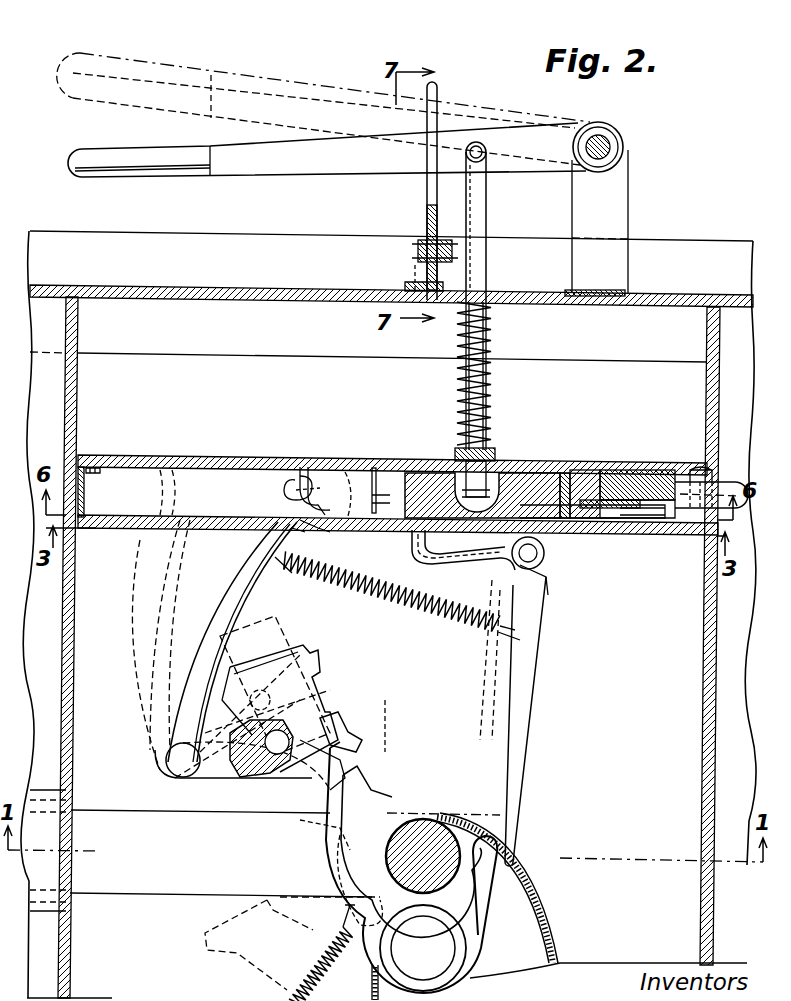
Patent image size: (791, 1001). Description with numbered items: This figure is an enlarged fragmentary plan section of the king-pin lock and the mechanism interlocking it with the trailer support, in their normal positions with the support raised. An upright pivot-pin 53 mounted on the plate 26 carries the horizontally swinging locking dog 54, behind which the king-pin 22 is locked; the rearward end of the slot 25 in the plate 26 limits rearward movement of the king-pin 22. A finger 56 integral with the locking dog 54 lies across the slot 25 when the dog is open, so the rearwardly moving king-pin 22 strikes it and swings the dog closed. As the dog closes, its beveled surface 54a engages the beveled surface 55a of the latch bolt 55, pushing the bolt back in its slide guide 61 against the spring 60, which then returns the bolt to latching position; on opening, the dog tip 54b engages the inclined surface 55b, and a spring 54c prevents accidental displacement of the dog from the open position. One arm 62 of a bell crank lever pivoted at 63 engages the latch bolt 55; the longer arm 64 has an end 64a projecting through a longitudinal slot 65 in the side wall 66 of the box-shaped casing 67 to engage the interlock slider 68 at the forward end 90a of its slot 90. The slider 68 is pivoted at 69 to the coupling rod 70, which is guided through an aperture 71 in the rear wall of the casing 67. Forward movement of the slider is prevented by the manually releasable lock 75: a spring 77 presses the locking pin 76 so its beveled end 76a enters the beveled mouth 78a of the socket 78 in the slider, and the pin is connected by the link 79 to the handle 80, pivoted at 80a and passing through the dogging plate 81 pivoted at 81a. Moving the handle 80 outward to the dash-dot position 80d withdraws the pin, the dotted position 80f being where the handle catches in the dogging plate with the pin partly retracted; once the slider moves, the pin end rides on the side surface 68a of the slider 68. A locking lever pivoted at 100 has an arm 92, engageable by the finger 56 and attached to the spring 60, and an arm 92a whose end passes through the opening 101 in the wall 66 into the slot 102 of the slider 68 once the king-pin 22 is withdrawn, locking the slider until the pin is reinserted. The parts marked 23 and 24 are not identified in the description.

The king-pin 22 is at (425, 835).
The carriage 23 is at (394, 740).
The top plate 24 is at (682, 238).
The slot 25 is at (148, 893).
The plate 26 is at (114, 842).
The pivot-pin 53 is at (423, 948).
The locking dog 54 is at (320, 866).
The beveled surface 54a is at (372, 775).
The tip 54b is at (340, 728).
The spring 54c is at (285, 992).
The latch bolt 55 is at (283, 790).
The beveled surface 55a is at (305, 812).
The inclined surface 55b is at (330, 826).
The finger 56 is at (345, 846).
The spring 60 is at (385, 612).
The slide guide 61 is at (305, 670).
The arm 62 is at (245, 778).
The pivot 63 is at (168, 766).
The arm 64 is at (235, 587).
The arm end 64a is at (158, 483).
The longitudinal slot 65 is at (275, 535).
The side wall 66 is at (193, 530).
The box-shaped casing 67 is at (325, 456).
The interlock slider 68 is at (400, 460).
The side surface 68a is at (545, 451).
The slider pivot 69 is at (575, 535).
The coupling rod 70 is at (740, 485).
The aperture 71 is at (720, 482).
The manually releasable lock 75 is at (490, 435).
The locking pin 76 is at (488, 405).
The beveled end 76a is at (455, 452).
The spring 77 is at (492, 337).
The socket 78 is at (562, 470).
The beveled mouth 78a is at (574, 468).
The link 79 is at (486, 209).
The handle 80 is at (298, 168).
The handle pivot 80a is at (625, 141).
The handle position 80d is at (265, 70).
The handle position 80f is at (302, 81).
The dogging plate 81 is at (427, 203).
The pivot 81a is at (418, 247).
The longitudinal slot 90 is at (318, 518).
The forward end of slot 90a is at (312, 475).
The arm 92 is at (522, 737).
The locking arm 92a is at (412, 556).
The pivot 100 is at (548, 565).
The opening 101 is at (395, 535).
The slot 102 is at (632, 520).